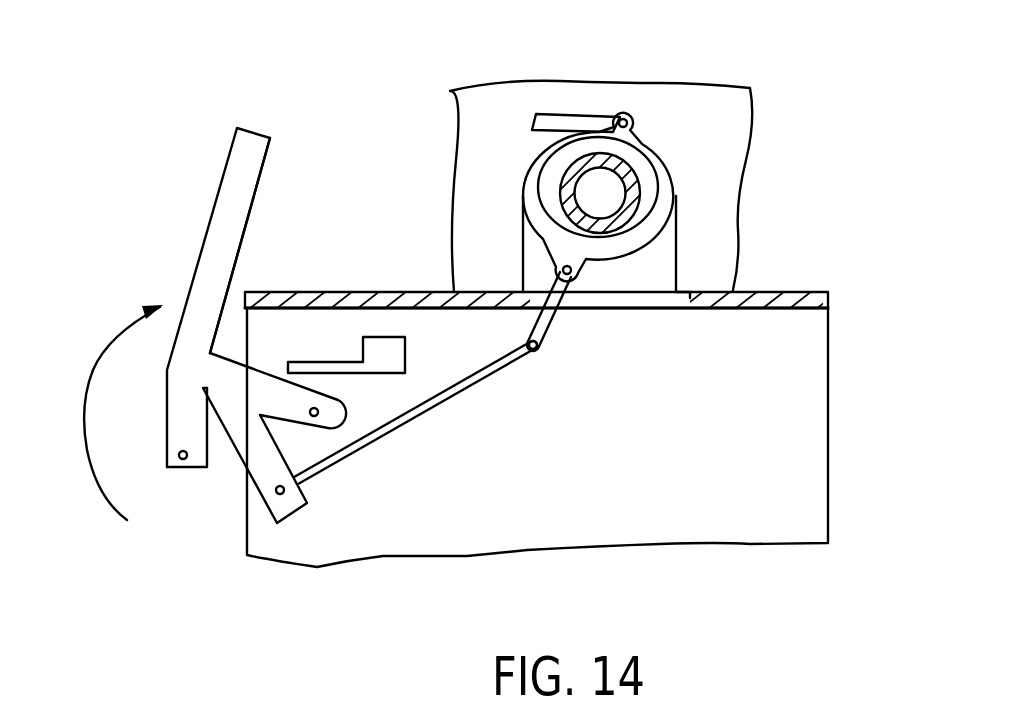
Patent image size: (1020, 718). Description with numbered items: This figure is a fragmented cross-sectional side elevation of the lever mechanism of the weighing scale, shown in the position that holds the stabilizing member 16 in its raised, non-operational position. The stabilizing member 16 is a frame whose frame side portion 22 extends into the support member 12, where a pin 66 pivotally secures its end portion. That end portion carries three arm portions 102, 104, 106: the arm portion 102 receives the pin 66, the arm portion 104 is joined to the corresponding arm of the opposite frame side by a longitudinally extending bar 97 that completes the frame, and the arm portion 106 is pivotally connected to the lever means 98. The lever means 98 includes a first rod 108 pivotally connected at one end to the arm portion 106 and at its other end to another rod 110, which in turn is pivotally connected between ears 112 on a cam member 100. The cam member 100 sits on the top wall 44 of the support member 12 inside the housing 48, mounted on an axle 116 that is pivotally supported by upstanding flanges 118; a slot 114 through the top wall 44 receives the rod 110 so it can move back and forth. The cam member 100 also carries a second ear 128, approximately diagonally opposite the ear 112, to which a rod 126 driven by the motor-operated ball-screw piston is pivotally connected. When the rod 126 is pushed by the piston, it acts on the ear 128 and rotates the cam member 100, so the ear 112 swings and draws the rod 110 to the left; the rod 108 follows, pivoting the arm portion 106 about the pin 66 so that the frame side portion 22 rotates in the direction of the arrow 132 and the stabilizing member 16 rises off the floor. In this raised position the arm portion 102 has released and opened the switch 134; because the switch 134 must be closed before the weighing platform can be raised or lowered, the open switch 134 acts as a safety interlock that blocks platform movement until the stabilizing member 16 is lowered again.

The support member 12 is at (812, 423).
The stabilizing member 16 is at (222, 175).
The frame side portion 22 is at (220, 255).
The top wall 44 is at (343, 302).
The housing 48 is at (741, 90).
The pin 66 is at (318, 410).
The bar 97 is at (183, 460).
The lever means 98 is at (548, 358).
The cam member 100 is at (652, 187).
The arm portion 102 is at (343, 428).
The arm portion 104 is at (185, 433).
The arm portion 106 is at (290, 505).
The first rod 108 is at (445, 397).
The rod 110 is at (545, 322).
The ear 112 is at (560, 262).
The slot 114 is at (688, 288).
The axle 116 is at (630, 168).
The flange 118 is at (660, 240).
The rod 126 is at (585, 72).
The second ear 128 is at (633, 116).
The arrow 132 is at (87, 413).
The switch 134 is at (342, 363).